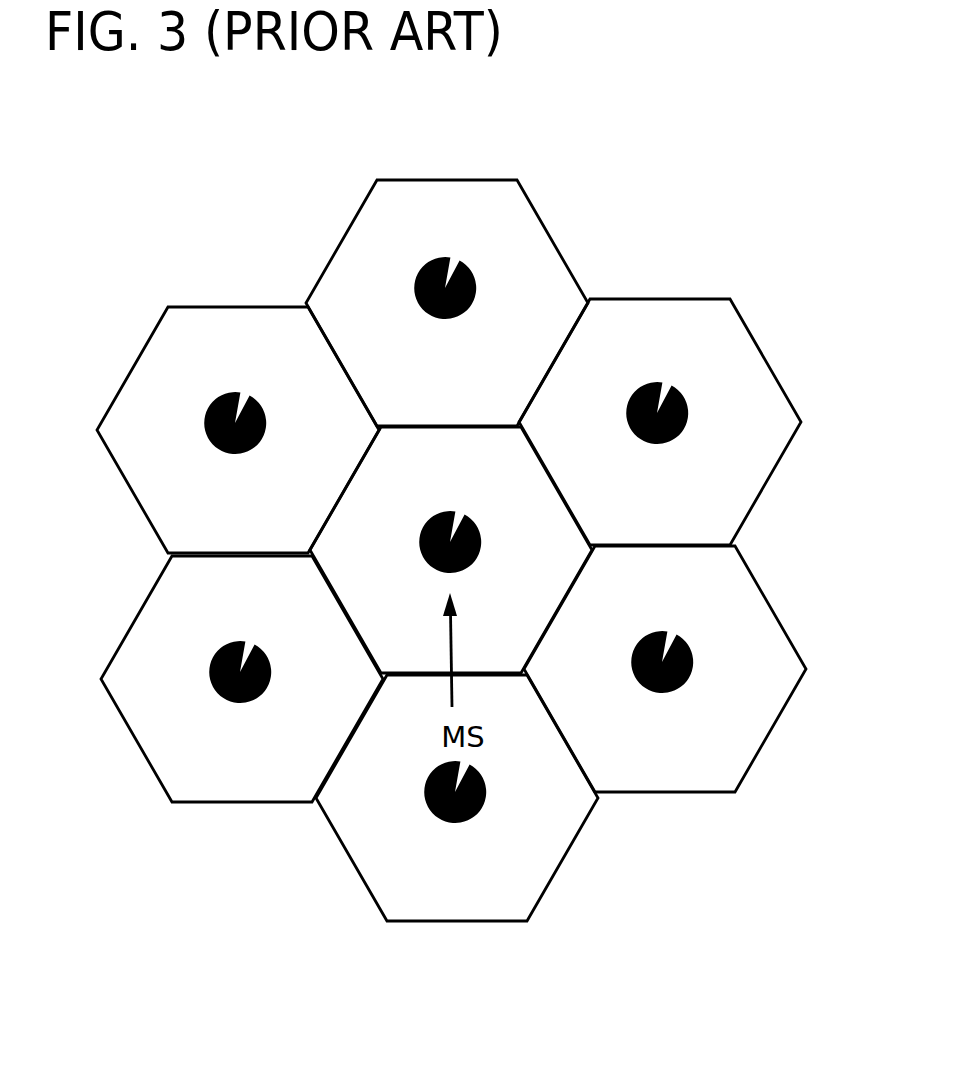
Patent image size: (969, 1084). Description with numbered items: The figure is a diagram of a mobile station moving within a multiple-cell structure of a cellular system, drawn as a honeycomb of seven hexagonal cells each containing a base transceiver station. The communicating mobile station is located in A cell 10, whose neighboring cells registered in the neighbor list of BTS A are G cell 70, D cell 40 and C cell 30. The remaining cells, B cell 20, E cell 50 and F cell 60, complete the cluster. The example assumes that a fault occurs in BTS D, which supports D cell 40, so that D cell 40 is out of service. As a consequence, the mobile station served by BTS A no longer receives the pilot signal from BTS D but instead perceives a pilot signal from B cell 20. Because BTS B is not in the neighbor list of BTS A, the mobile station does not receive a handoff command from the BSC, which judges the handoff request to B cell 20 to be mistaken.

The A cell 10 is at (375, 863).
The B cell 20 is at (455, 180).
The C cell 30 is at (807, 627).
The D cell 40 is at (603, 528).
The E cell 50 is at (253, 304).
The F cell 60 is at (735, 294).
The G cell 70 is at (142, 650).